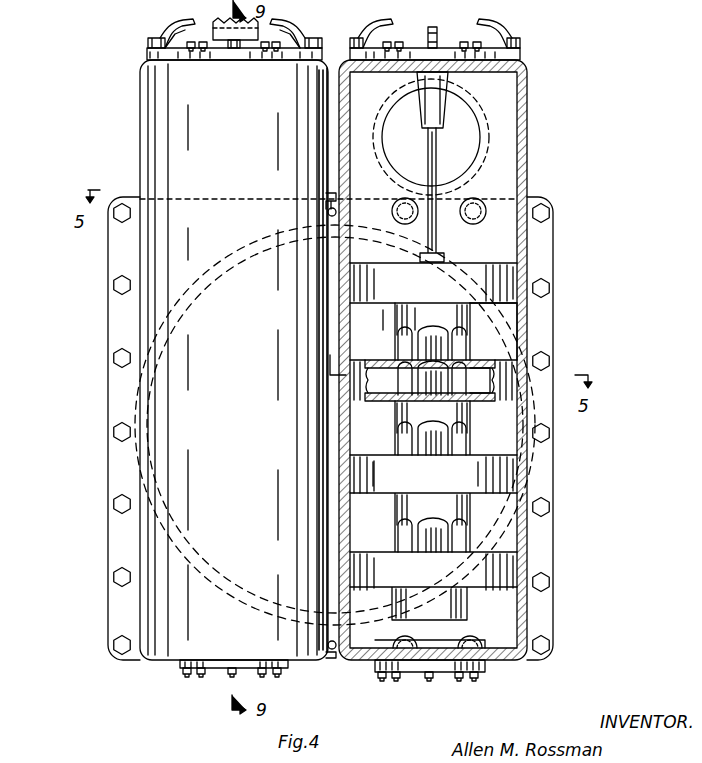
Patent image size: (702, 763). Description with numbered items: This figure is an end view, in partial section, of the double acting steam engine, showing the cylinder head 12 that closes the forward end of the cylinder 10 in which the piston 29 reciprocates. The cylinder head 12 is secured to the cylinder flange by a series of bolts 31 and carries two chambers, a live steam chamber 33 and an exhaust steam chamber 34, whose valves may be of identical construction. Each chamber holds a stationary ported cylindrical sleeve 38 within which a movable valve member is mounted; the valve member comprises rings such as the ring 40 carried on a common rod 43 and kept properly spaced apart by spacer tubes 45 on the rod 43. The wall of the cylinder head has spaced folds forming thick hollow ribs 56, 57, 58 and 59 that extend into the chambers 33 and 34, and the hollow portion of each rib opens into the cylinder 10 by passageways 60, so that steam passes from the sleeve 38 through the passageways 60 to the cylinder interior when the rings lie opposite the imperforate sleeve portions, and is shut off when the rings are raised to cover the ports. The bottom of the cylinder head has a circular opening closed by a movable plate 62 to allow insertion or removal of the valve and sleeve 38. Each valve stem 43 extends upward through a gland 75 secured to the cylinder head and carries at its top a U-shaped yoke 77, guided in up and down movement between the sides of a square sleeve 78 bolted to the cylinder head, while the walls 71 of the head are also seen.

The cylinder 10 is at (522, 333).
The cylinder head 12 is at (120, 110).
The piston 29 is at (369, 428).
The bolts 31 is at (118, 358).
The live steam chamber 33 is at (148, 136).
The exhaust steam chamber 34 is at (520, 145).
The stationary ported cylindrical sleeve 38 is at (403, 320).
The ring 40 is at (397, 401).
The rod 43 is at (436, 175).
The spacer tubes 45 is at (428, 345).
The hollow rib 56 is at (488, 272).
The hollow rib 57 is at (498, 342).
The hollow rib 58 is at (482, 465).
The hollow rib 59 is at (490, 588).
The passageways 60 is at (482, 385).
The movable plate 62 is at (182, 665).
The walls 71 is at (340, 66).
The gland 75 is at (437, 105).
The U-shaped yoke 77 is at (226, 18).
The square sleeve 78 is at (172, 30).